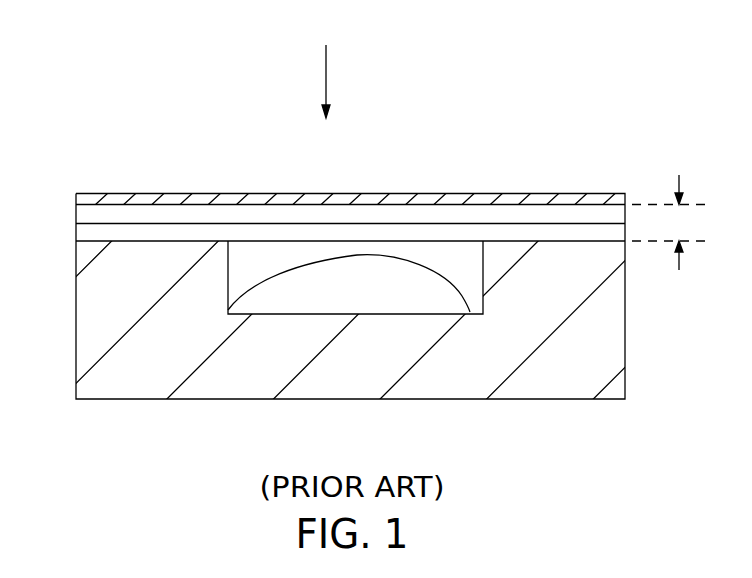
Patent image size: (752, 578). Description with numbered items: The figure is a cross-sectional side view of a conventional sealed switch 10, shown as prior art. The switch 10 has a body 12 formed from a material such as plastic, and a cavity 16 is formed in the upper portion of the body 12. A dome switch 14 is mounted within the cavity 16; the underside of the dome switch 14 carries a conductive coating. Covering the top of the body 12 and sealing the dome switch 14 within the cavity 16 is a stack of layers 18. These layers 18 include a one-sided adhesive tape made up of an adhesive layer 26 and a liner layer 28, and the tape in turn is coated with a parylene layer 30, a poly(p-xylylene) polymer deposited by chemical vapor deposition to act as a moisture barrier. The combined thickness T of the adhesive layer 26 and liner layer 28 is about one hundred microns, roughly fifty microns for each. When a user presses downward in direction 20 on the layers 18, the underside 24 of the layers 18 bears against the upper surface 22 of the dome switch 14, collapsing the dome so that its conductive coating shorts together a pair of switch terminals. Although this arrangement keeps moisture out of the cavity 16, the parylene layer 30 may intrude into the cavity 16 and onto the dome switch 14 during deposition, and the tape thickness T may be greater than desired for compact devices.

The switch 10 is at (648, 103).
The body 12 is at (615, 353).
The dome switch 14 is at (470, 309).
The cavity 16 is at (252, 253).
The layers 18 is at (70, 193).
The direction 20 is at (327, 78).
The upper surface 22 is at (342, 253).
The underside 24 is at (360, 242).
The adhesive layer 26 is at (530, 235).
The liner layer 28 is at (483, 215).
The parylene layer 30 is at (595, 201).